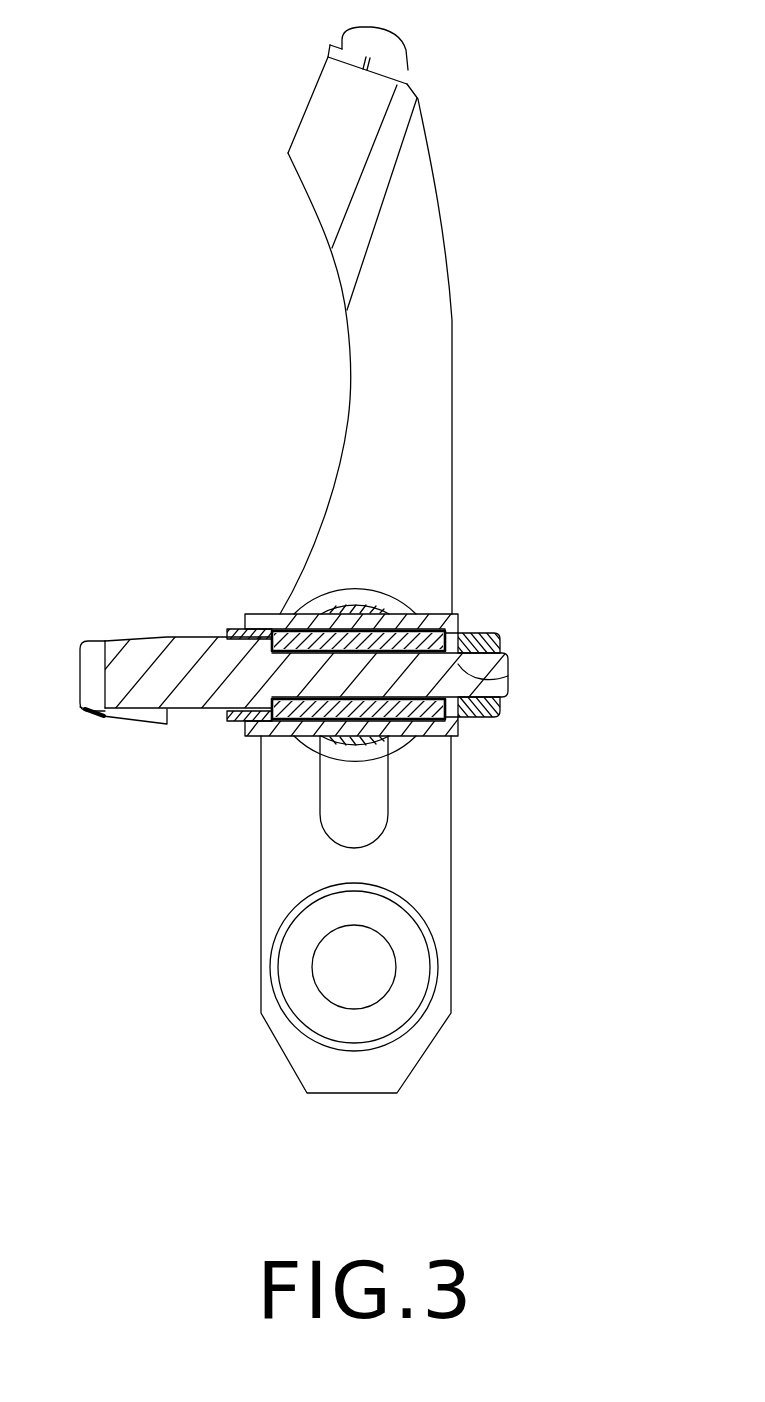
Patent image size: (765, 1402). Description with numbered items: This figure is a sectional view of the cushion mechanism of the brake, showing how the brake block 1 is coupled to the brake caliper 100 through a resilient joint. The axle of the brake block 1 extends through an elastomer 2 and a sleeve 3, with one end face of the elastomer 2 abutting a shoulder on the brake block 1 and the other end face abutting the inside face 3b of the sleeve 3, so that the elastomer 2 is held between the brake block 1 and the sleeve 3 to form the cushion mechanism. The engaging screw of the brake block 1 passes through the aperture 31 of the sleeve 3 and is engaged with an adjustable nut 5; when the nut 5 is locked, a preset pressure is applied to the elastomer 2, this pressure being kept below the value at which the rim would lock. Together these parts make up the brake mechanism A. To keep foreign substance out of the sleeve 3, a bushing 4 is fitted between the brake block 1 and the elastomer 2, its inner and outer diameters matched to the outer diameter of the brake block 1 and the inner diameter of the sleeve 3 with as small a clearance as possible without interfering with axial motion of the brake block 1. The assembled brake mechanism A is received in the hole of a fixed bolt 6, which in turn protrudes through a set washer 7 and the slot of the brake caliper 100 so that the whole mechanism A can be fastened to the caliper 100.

The brake caliper 100 is at (438, 356).
The brake block 1 is at (117, 638).
The elastomer 2 is at (453, 737).
The sleeve 3 is at (457, 630).
The inside face of the sleeve 3b is at (423, 631).
The aperture of the sleeve 31 is at (508, 676).
The bushing 4 is at (227, 630).
The adjustable nut 5 is at (498, 718).
The fixed bolt 6 is at (340, 748).
The set washer 7 is at (322, 602).
The brake mechanism A is at (548, 620).